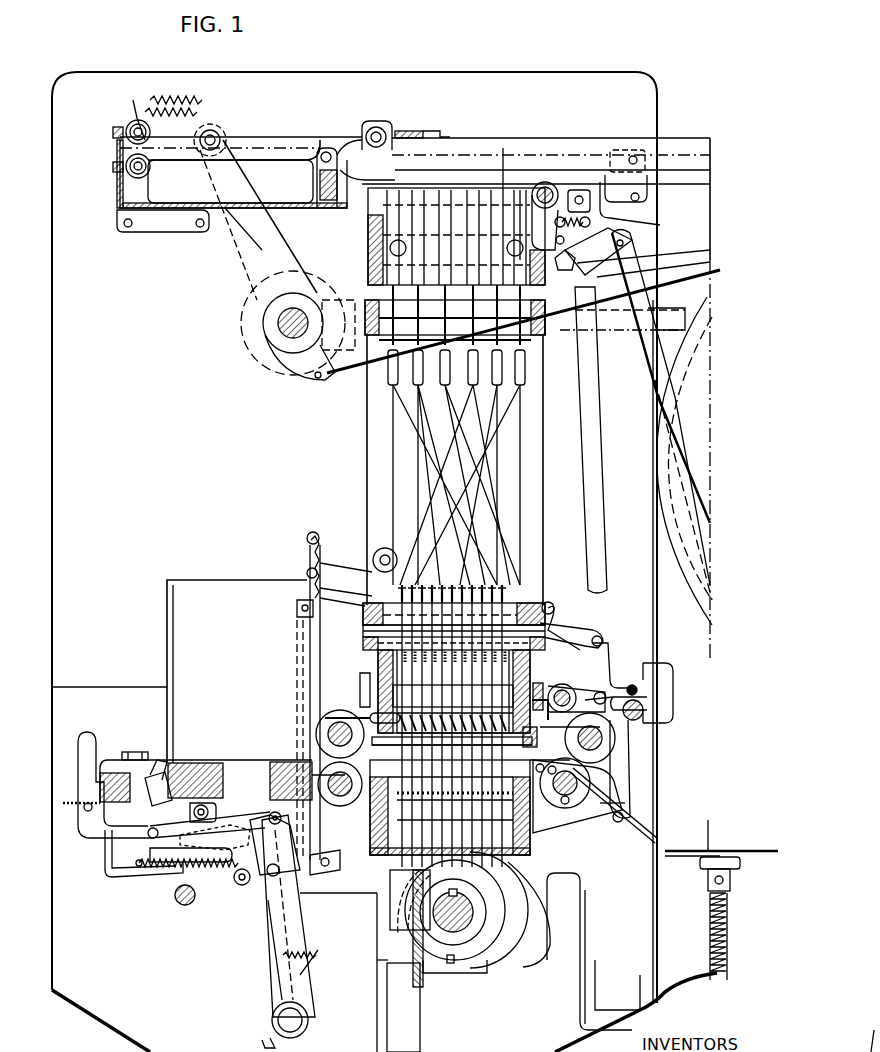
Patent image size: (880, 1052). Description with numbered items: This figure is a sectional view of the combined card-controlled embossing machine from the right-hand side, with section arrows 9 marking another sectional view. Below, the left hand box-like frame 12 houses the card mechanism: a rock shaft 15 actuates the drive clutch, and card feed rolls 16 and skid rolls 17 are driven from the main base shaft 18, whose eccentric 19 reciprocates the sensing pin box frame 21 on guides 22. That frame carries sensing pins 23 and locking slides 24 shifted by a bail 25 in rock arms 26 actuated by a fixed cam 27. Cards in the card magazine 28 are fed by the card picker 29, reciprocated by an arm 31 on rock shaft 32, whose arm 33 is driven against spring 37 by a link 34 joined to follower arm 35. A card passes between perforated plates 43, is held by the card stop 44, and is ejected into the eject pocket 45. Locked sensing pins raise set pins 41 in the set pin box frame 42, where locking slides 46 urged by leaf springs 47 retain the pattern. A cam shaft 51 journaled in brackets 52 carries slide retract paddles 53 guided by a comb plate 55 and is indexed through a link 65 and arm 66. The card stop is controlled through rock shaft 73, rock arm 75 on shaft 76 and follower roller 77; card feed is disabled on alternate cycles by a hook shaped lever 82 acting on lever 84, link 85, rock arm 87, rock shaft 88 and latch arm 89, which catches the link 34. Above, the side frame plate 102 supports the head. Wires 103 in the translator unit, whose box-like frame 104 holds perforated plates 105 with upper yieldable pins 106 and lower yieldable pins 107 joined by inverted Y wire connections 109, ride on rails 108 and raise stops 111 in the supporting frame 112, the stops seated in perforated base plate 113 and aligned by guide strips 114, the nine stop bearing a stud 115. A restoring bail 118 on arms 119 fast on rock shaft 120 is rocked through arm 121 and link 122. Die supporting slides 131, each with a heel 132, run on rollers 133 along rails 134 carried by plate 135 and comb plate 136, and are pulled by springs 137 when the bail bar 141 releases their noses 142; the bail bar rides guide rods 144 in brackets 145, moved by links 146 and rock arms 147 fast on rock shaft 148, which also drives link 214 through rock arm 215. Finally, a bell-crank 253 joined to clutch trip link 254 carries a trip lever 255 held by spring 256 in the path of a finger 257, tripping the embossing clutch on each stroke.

The section line 9 is at (145, 90).
The left hand box-like frame 12 is at (106, 966).
The rock shaft 15 is at (180, 905).
The card feed rolls 16 is at (318, 735).
The skid rolls 17 is at (320, 702).
The main base shaft 18 is at (474, 900).
The eccentric 19 is at (498, 915).
The sensing pin box frame 21 is at (380, 806).
The guides 22 is at (388, 972).
The sensing pins 23 is at (532, 752).
The locking slides 24 is at (512, 905).
The bail 25 is at (545, 811).
The rock arms 26 is at (548, 836).
The fixed cam 27 is at (585, 906).
The card magazine 28 is at (236, 649).
The card picker 29 is at (200, 763).
The arm 31 is at (272, 968).
The rock shaft 32 is at (290, 1020).
The arm 33 is at (270, 940).
The link 34 is at (352, 890).
The follower arm 35 is at (380, 984).
The spring 37 is at (308, 953).
The set pins 41 is at (400, 703).
The set pin box frame 42 is at (378, 665).
The perforated plates 43 is at (300, 786).
The card stop 44 is at (537, 738).
The eject pocket 45 is at (690, 912).
The locking slides 46 is at (325, 718).
The leaf springs 47 is at (362, 690).
The cam shaft 51 is at (645, 707).
The brackets 52 is at (670, 670).
The slide retract paddles 53 is at (645, 697).
The comb plate 55 is at (558, 688).
The link 65 is at (622, 793).
The arm 66 is at (600, 828).
The rock shaft 73 is at (590, 688).
The rock arm 75 is at (590, 630).
The shaft 76 is at (520, 590).
The follower roller 77 is at (634, 688).
The hook shaped lever 82 is at (550, 610).
The lever 84 is at (420, 560).
The link 85 is at (320, 560).
The rock arm 87 is at (300, 886).
The rock shaft 88 is at (240, 886).
The latch arm 89 is at (318, 861).
The side frame plate 102 is at (176, 449).
The wires 103 is at (536, 518).
The box-like frame 104 is at (375, 383).
The perforated plates 105 is at (528, 350).
The upper yieldable pins 106 is at (526, 372).
The lower yieldable pins 107 is at (363, 630).
The rails 108 is at (532, 600).
The inverted Y wire connection 109 is at (385, 383).
The stop 111 is at (395, 266).
The supporting frame 112 is at (370, 242).
The perforated base plate 113 is at (530, 332).
The guide strips 114 is at (456, 313).
The stud 115 is at (505, 148).
The restoring bail 118 is at (515, 320).
The arms 119 is at (522, 190).
The rock shaft 120 is at (545, 182).
The arm 121 is at (572, 193).
The link 122 is at (598, 409).
The die supporting slides 131 is at (585, 145).
The heel 132 is at (388, 150).
The rollers 133 is at (158, 133).
The rails 134 is at (117, 150).
The plate 135 is at (232, 228).
The comb plate 136 is at (118, 138).
The springs 137 is at (206, 102).
The bail bar 141 is at (423, 131).
The nose 142 is at (400, 131).
The guide rods 144 is at (640, 214).
The brackets 145 is at (335, 148).
The links 146 is at (300, 135).
The rock arms 147 is at (238, 255).
The rock shaft 148 is at (278, 323).
The link 214 is at (700, 246).
The rock arm 215 is at (318, 376).
The bell-crank 253 is at (700, 264).
The clutch trip link 254 is at (668, 434).
The trip lever 255 is at (612, 222).
The spring 256 is at (611, 310).
The finger 257 is at (450, 185).